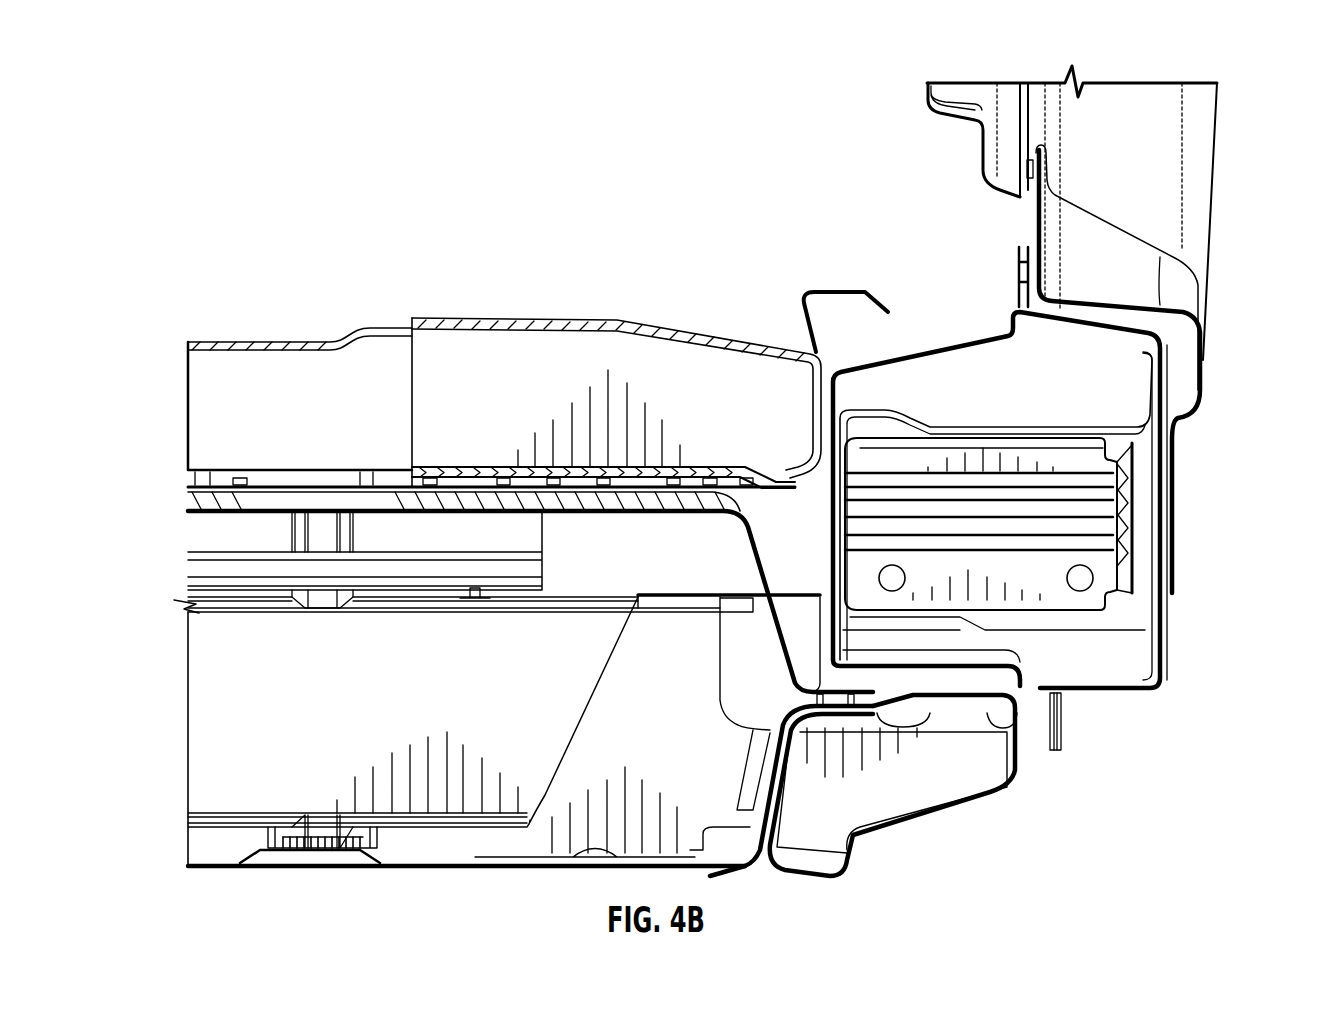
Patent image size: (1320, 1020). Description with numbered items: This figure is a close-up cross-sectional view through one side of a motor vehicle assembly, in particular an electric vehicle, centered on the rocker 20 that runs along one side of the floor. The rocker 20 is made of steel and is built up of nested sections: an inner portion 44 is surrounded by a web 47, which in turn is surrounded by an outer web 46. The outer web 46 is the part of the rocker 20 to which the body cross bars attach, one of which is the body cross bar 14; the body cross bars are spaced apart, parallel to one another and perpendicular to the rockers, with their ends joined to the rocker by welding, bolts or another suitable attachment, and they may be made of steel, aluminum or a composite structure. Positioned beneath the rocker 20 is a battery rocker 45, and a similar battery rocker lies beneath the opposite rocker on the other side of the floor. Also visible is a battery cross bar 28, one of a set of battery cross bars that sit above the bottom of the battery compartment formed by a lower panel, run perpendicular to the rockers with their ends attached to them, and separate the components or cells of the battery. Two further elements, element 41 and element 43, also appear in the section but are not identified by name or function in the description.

The body cross bar 14 is at (620, 338).
The rocker 20 is at (1068, 557).
The battery cross bar 28 is at (205, 688).
The fastener assembly 41 is at (313, 548).
The frame member 43 is at (1200, 100).
The inner portion 44 is at (1103, 507).
The battery rocker 45 is at (947, 790).
The outer web 46 is at (1163, 370).
The web 47 is at (1067, 430).